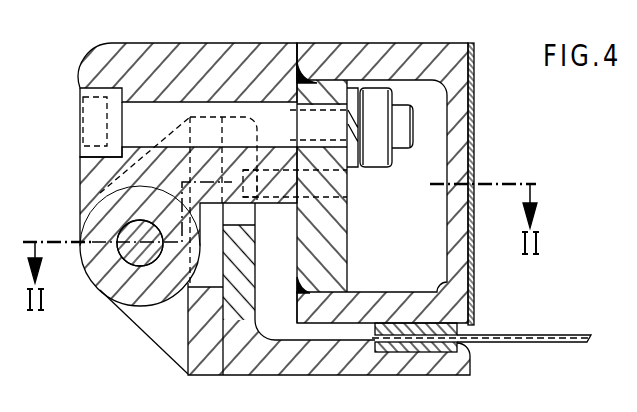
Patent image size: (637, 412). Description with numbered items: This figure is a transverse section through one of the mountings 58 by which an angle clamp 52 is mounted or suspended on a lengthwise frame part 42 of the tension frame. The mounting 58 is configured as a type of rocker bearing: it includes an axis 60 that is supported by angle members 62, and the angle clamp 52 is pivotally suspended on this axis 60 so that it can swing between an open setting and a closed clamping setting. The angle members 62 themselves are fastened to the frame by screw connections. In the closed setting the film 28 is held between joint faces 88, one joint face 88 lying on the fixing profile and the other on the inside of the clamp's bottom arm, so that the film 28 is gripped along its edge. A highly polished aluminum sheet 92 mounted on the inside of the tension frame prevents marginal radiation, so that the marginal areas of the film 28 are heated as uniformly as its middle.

The film 28 is at (584, 340).
The lengthwise frame part 42 is at (430, 36).
The angle clamp 52 is at (263, 386).
The mounting 58 is at (112, 43).
The axis 60 is at (123, 236).
The angle member 62 is at (190, 373).
The joint face 88 is at (400, 328).
The highly polished aluminum sheet 92 is at (475, 148).